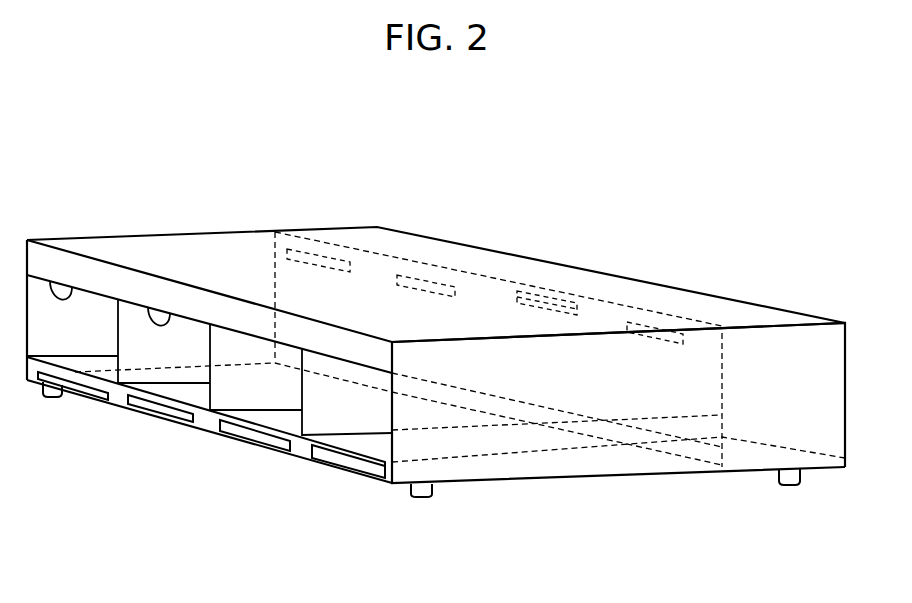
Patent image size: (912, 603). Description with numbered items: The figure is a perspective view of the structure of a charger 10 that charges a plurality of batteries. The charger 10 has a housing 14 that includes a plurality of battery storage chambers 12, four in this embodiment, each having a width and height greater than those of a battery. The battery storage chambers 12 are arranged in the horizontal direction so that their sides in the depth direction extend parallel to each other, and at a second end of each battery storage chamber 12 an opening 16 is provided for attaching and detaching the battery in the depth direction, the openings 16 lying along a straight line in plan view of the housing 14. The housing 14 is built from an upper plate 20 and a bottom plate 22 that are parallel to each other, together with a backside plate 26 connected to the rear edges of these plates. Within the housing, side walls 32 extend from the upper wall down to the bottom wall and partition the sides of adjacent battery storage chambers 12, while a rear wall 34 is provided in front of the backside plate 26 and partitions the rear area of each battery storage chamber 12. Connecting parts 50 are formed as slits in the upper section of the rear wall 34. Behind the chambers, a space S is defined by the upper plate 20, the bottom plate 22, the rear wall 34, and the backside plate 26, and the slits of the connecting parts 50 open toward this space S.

The charger 10 is at (300, 124).
The battery storage chamber 12 is at (158, 353).
The housing 14 is at (231, 235).
The opening 16 is at (143, 306).
The upper plate 20 is at (749, 305).
The bottom plate 22 is at (770, 456).
The backside plate 26 is at (582, 281).
The side wall 32 is at (329, 411).
The rear wall 34 is at (482, 298).
The connecting part 50 is at (420, 277).
The space S is at (683, 338).